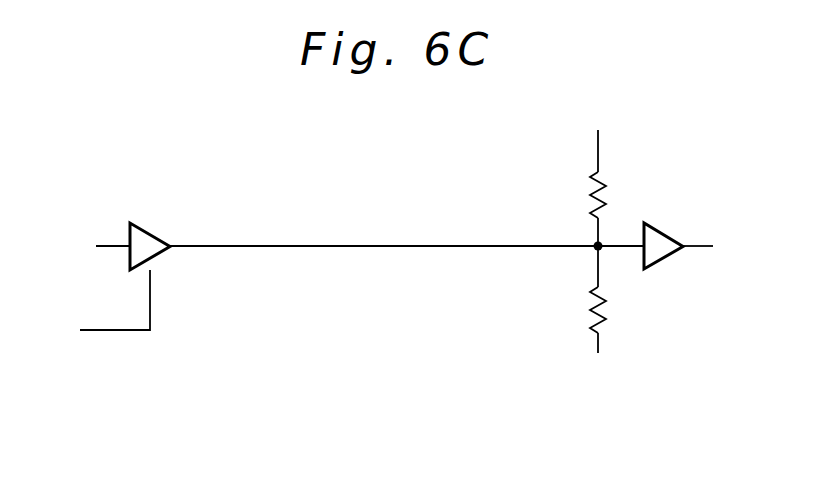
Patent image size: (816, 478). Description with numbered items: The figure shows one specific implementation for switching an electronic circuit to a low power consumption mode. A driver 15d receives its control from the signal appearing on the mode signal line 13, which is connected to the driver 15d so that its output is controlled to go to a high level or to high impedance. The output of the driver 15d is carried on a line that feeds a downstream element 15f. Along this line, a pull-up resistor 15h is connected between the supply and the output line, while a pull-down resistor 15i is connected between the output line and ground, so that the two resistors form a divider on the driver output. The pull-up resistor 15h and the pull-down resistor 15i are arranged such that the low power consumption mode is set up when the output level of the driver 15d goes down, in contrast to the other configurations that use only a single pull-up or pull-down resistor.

The mode signal line 13 is at (118, 331).
The driver 15d is at (152, 229).
The buffer/receiver 15f is at (665, 268).
The pull-up resistor 15h is at (605, 190).
The pull-down resistor 15i is at (591, 308).